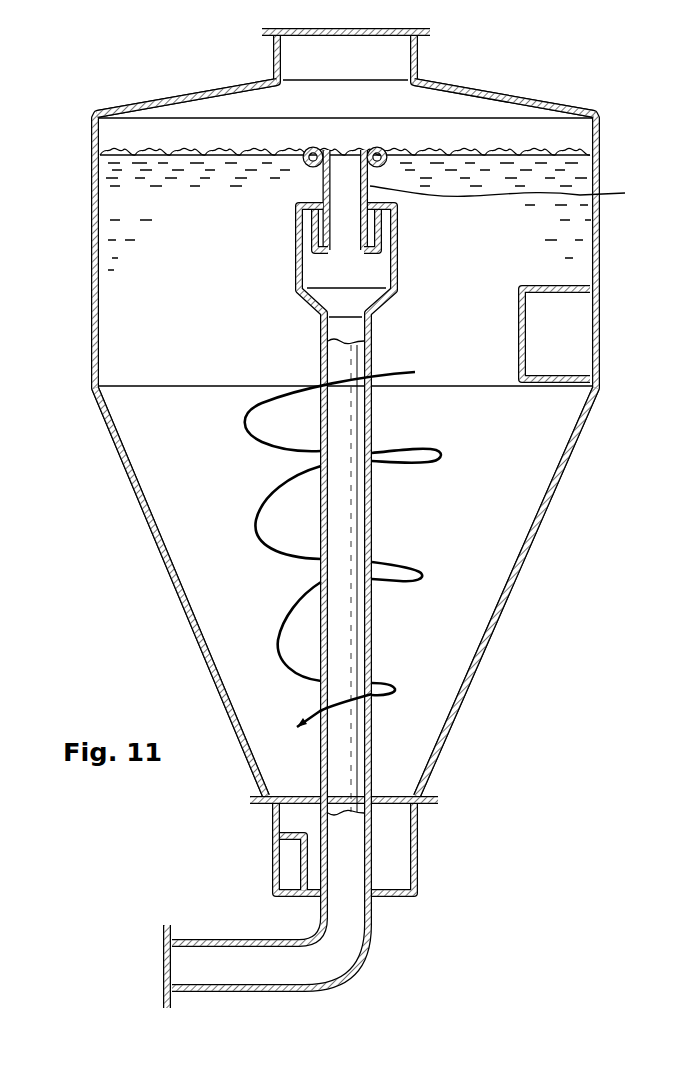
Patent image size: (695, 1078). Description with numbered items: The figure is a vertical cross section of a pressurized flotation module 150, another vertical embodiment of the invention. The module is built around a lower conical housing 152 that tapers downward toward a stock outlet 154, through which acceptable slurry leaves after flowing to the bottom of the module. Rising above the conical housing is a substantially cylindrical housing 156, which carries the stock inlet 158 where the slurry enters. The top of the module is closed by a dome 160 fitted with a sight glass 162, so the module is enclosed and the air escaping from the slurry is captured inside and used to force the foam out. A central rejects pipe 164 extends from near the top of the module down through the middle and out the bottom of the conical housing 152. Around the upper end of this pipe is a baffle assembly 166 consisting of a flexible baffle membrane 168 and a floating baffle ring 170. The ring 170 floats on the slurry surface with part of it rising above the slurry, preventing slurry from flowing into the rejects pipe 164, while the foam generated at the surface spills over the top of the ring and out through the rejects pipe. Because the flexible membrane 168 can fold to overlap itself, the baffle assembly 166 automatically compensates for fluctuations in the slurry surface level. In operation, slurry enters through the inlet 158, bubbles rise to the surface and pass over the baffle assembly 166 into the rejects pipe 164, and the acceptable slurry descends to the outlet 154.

The pressurized flotation module 150 is at (123, 93).
The lower conical housing 152 is at (505, 590).
The stock outlet 154 is at (290, 867).
The cylindrical housing 156 is at (598, 268).
The stock inlet 158 is at (570, 355).
The dome 160 is at (491, 94).
The sight glass 162 is at (277, 26).
The central rejects pipe 164 is at (353, 927).
The baffle assembly 166 is at (308, 179).
The flexible baffle membrane 168 is at (514, 195).
The floating baffle ring 170 is at (378, 146).